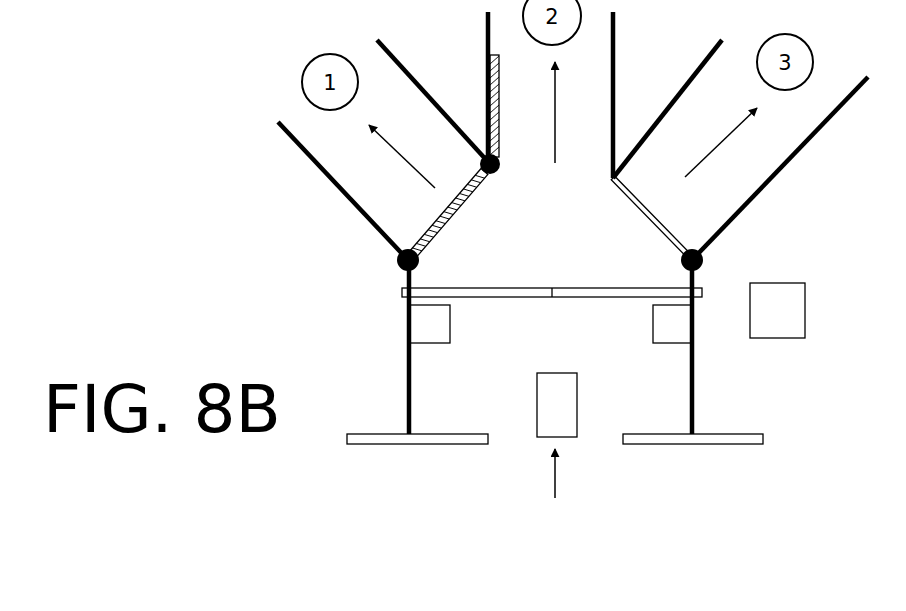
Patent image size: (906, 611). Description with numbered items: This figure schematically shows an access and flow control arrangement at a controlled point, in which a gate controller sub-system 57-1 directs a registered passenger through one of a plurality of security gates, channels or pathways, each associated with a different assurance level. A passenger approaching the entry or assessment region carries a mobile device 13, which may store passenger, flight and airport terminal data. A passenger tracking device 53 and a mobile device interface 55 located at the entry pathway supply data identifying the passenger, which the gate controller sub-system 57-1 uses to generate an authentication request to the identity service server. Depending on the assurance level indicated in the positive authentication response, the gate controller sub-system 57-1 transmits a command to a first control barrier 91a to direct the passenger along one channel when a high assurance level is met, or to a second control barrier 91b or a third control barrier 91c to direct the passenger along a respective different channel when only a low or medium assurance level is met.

The first control barrier 91a is at (433, 235).
The second control barrier 91b is at (513, 153).
The third control barrier 91c is at (657, 238).
The passenger tracking device 53 is at (430, 345).
The mobile device interface 55 is at (672, 345).
The mobile device 13 is at (578, 405).
The gate controller sub-system 57-1 is at (775, 340).